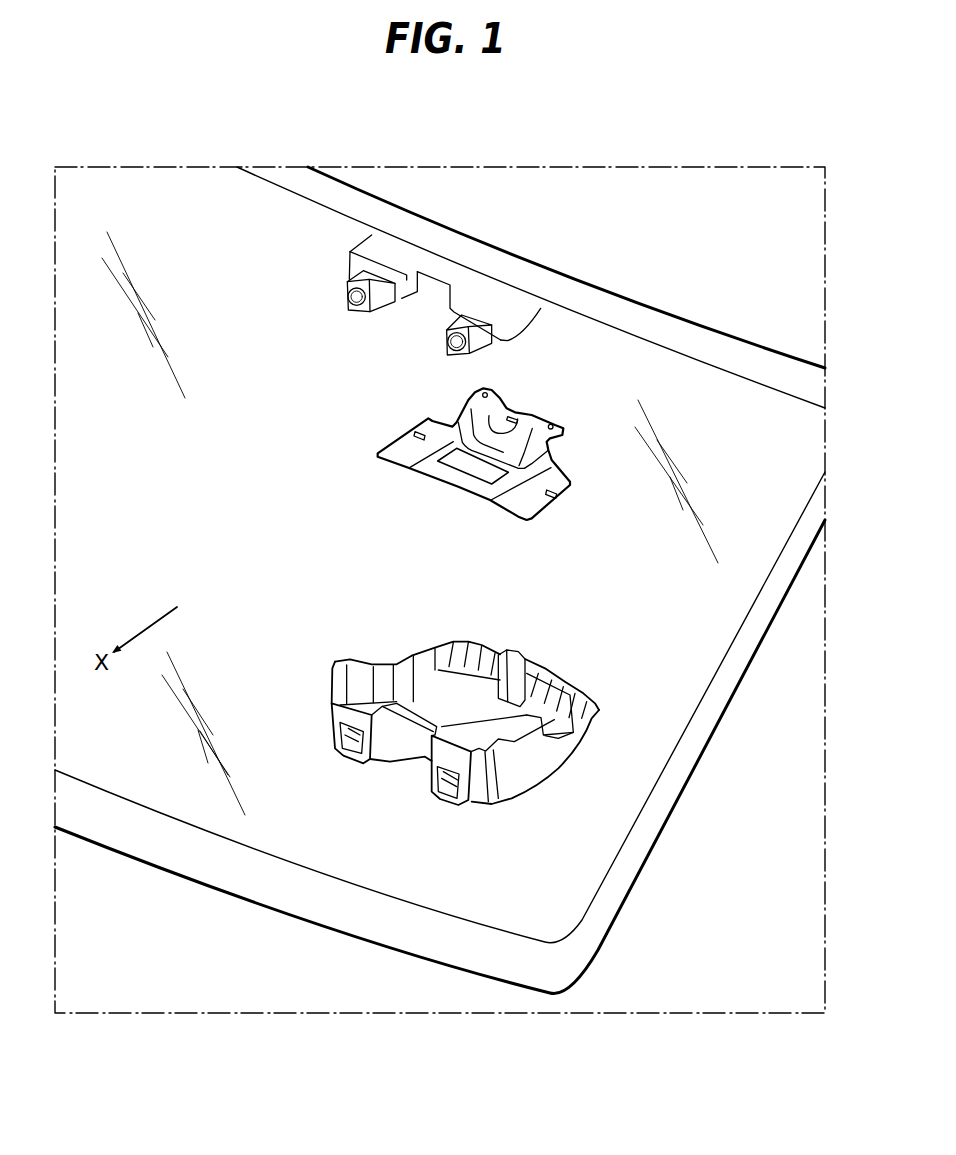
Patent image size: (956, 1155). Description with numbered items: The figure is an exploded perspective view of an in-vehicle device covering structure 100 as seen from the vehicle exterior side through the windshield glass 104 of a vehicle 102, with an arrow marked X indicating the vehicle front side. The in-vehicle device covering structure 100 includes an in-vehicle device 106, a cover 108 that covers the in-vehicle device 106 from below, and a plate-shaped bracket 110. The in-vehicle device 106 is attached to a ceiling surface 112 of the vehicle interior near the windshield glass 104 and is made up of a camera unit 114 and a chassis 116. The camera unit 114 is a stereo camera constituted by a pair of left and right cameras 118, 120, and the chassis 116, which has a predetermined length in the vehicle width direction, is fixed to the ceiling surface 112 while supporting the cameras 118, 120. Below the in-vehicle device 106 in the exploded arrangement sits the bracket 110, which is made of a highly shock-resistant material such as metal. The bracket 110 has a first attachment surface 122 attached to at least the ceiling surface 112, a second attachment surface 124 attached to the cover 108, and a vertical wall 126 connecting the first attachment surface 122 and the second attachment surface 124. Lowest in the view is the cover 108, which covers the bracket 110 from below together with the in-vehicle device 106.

The in-vehicle device covering structure 100 is at (428, 520).
The vehicle 102 is at (440, 550).
The windshield glass 104 is at (440, 732).
The in-vehicle device 106 is at (420, 310).
The cover 108 is at (465, 693).
The bracket 110 is at (487, 468).
The ceiling surface 112 is at (531, 287).
The camera unit 114 is at (375, 328).
The chassis 116 is at (548, 332).
The camera 118 is at (400, 350).
The camera 120 is at (351, 314).
The first attachment surface 122 is at (539, 400).
The second attachment surface 124 is at (522, 518).
The vertical wall 126 is at (535, 438).